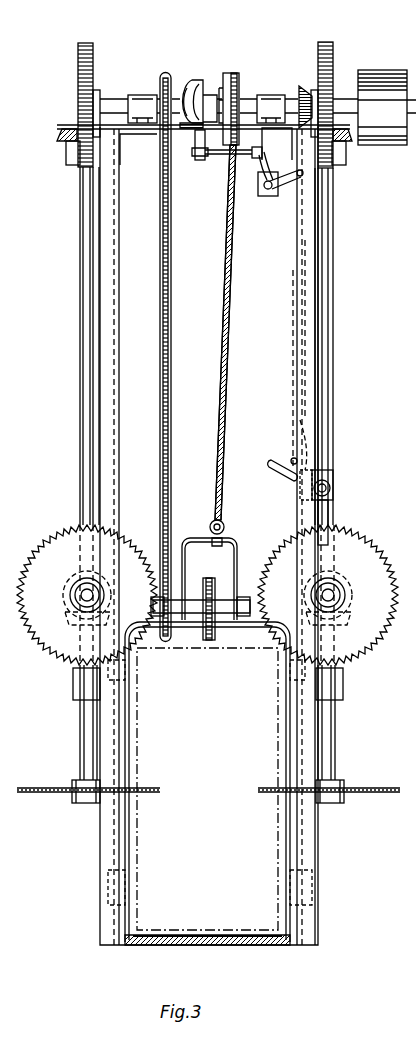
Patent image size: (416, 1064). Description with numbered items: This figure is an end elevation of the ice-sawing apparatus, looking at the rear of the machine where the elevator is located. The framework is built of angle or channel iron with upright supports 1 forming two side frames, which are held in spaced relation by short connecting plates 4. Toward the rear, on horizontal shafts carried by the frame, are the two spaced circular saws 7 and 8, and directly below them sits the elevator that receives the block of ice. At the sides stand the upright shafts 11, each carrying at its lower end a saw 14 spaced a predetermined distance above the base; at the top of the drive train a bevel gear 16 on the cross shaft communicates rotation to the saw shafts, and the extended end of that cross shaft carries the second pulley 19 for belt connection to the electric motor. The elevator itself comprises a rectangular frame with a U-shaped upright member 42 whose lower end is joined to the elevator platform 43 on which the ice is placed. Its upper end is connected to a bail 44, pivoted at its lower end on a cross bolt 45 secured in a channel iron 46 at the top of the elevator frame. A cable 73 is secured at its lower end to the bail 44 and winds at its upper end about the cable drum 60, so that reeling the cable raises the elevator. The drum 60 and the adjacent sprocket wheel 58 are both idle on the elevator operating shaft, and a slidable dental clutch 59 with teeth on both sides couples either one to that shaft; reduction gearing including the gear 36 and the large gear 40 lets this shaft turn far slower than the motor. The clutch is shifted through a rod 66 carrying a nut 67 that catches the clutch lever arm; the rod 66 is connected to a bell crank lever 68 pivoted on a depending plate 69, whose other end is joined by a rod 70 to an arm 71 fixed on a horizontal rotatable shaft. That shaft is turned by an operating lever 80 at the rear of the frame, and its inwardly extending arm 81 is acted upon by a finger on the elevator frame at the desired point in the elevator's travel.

The upright supports 1 is at (108, 232).
The connecting plates 4 is at (157, 130).
The circular saw 7 is at (55, 668).
The circular saw 8 is at (407, 75).
The upright shaft 11 is at (78, 402).
The saw 14 is at (44, 793).
The bevel gear 16 is at (312, 92).
The second pulley 19 is at (390, 148).
The gear 36 is at (78, 70).
The large gear 40 is at (333, 60).
The U-shaped upright member 42 is at (288, 751).
The elevator platform 43 is at (222, 930).
The bail 44 is at (236, 556).
The cross bolt 45 is at (222, 618).
The channel iron 46 is at (238, 605).
The sprocket wheel 58 is at (166, 73).
The slidable dental clutch 59 is at (200, 84).
The cable drum 60 is at (232, 72).
The rod 66 is at (220, 152).
The nut 67 is at (198, 160).
The bell crank lever 68 is at (290, 192).
The depending plate 69 is at (262, 196).
The rod 70 is at (296, 284).
The arm 71 is at (292, 460).
The cable 73 is at (228, 365).
The operating lever 80 is at (328, 518).
The inwardly extending arm 81 is at (281, 470).